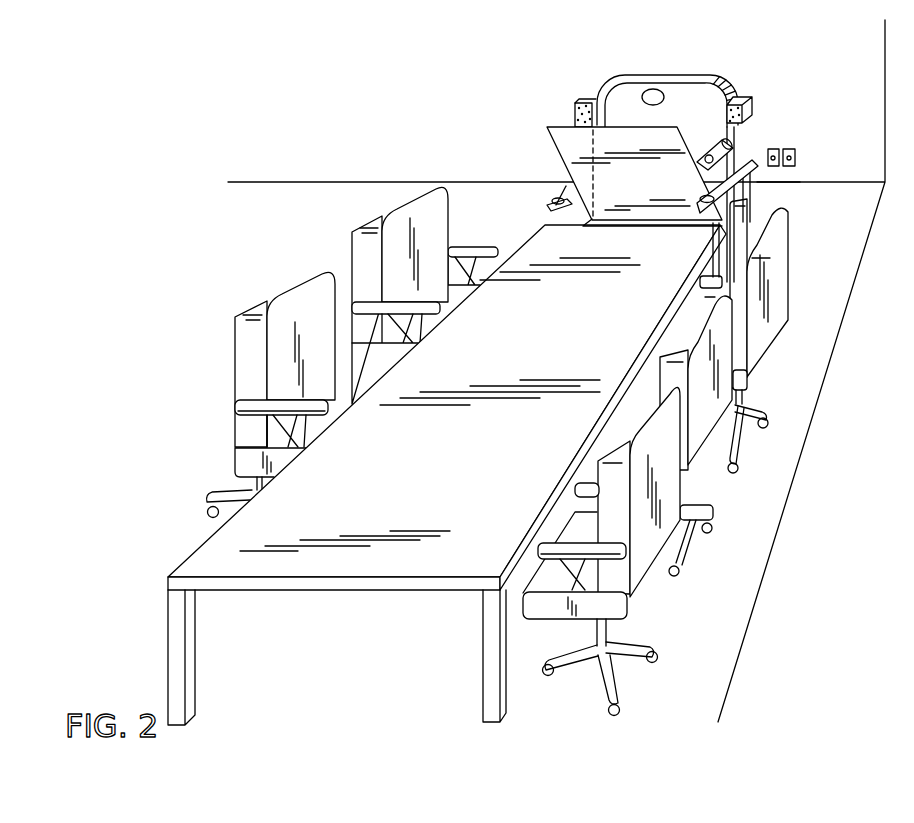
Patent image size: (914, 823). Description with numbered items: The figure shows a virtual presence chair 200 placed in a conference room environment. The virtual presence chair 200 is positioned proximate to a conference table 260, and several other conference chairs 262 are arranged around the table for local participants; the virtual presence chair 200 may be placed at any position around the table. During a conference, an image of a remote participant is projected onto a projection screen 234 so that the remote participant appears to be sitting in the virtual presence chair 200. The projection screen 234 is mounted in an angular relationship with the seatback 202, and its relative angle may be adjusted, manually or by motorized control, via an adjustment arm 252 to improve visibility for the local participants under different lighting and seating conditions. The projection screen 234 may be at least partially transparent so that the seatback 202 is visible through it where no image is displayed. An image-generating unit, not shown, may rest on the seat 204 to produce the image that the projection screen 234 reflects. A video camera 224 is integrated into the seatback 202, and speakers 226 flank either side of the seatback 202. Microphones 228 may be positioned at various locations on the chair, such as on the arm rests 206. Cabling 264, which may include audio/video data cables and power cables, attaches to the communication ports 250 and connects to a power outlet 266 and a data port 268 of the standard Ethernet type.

The virtual presence chair 200 is at (671, 251).
The seatback 202 is at (660, 76).
The seat 204 is at (590, 226).
The arm rests 206 is at (568, 186).
The video camera 224 is at (651, 88).
The speakers 226 is at (578, 104).
The microphones 228 is at (550, 201).
The projection screen 234 is at (551, 127).
The communication ports 250 is at (748, 190).
The adjustment arm 252 is at (718, 147).
The conference table 260 is at (365, 566).
The conference chairs 262 is at (378, 210).
The cabling 264 is at (782, 186).
The power outlet 266 is at (776, 152).
The data port 268 is at (796, 157).